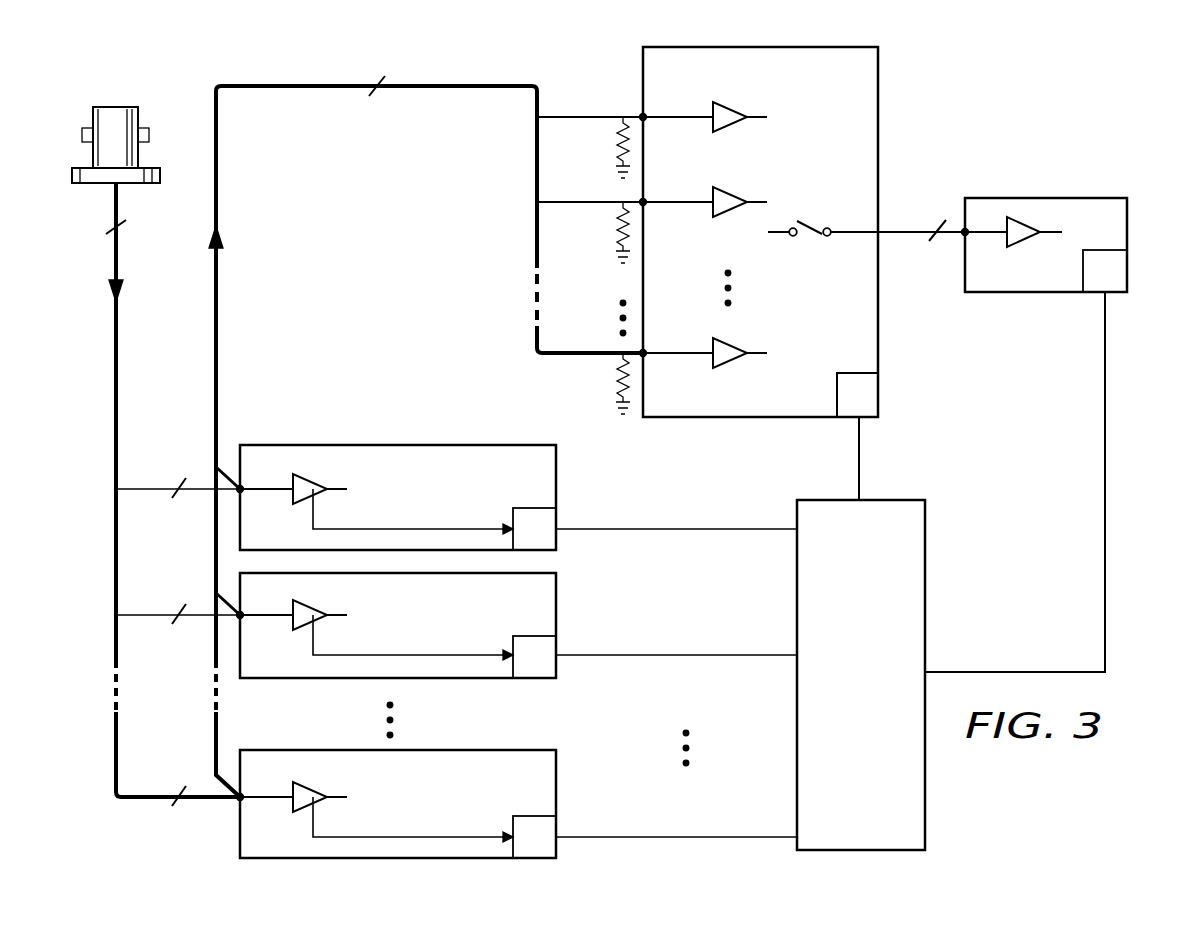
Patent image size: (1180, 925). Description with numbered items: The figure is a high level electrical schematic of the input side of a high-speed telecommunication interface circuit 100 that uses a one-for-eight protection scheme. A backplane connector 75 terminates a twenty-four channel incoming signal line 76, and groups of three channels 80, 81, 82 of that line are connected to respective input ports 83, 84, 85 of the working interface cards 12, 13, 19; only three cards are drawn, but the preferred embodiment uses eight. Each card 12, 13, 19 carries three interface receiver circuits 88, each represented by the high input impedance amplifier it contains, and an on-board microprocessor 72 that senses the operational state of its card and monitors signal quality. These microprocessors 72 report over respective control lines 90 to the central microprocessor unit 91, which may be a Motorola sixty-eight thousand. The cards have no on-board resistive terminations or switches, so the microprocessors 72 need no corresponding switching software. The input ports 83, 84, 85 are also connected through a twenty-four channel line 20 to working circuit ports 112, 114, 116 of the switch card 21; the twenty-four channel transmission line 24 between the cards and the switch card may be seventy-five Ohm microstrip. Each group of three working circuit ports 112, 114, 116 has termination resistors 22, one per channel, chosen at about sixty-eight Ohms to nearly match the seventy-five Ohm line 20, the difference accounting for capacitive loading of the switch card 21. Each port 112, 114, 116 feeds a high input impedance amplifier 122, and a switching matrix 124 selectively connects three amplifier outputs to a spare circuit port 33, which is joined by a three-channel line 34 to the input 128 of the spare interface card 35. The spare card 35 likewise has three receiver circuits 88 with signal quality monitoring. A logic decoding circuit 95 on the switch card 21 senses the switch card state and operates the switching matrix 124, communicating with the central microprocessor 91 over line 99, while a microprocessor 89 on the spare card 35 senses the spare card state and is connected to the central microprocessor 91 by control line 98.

The telecommunication circuit 100 is at (1100, 78).
The backplane connector 75 is at (110, 107).
The incoming signal line 76 is at (108, 259).
The twenty-four channel transmission line 24 is at (236, 143).
The twenty-four channel line 20 is at (323, 86).
The switch card 21 is at (880, 108).
The termination resistor 22 is at (616, 140).
The working circuit port 112 is at (646, 122).
The working circuit port 114 is at (646, 207).
The working circuit port 116 is at (646, 358).
The high input impedance amplifier 122 is at (738, 124).
The switching matrix 124 is at (826, 240).
The spare circuit port 33 is at (882, 225).
The three-channel line 34 is at (914, 236).
The input 128 is at (962, 236).
The spare interface card 35 is at (1012, 293).
The interface receiver circuit 88 is at (1028, 240).
The microprocessor 89 is at (1097, 293).
The logic decoding circuit 95 is at (880, 410).
The line 99 is at (857, 464).
The central microprocessor unit 91 is at (873, 698).
The control line 98 is at (1012, 670).
The working interface card 12 is at (318, 445).
The working interface card 13 is at (282, 680).
The working interface card 19 is at (558, 778).
The group of three channels 80 is at (140, 518).
The group of three channels 81 is at (140, 644).
The group of three channels 82 is at (140, 826).
The input port 83 is at (243, 494).
The input port 84 is at (243, 620).
The input port 85 is at (243, 802).
The on-board microprocessor 72 is at (558, 543).
The control line 90 is at (752, 531).